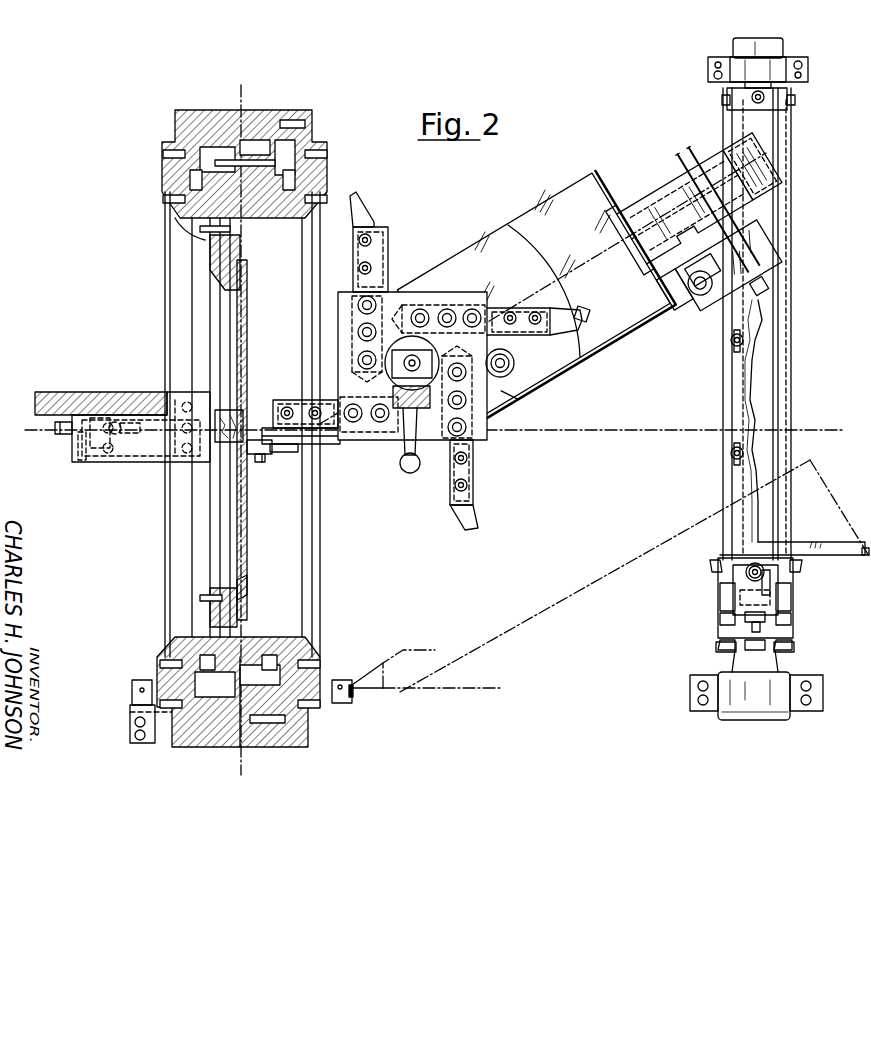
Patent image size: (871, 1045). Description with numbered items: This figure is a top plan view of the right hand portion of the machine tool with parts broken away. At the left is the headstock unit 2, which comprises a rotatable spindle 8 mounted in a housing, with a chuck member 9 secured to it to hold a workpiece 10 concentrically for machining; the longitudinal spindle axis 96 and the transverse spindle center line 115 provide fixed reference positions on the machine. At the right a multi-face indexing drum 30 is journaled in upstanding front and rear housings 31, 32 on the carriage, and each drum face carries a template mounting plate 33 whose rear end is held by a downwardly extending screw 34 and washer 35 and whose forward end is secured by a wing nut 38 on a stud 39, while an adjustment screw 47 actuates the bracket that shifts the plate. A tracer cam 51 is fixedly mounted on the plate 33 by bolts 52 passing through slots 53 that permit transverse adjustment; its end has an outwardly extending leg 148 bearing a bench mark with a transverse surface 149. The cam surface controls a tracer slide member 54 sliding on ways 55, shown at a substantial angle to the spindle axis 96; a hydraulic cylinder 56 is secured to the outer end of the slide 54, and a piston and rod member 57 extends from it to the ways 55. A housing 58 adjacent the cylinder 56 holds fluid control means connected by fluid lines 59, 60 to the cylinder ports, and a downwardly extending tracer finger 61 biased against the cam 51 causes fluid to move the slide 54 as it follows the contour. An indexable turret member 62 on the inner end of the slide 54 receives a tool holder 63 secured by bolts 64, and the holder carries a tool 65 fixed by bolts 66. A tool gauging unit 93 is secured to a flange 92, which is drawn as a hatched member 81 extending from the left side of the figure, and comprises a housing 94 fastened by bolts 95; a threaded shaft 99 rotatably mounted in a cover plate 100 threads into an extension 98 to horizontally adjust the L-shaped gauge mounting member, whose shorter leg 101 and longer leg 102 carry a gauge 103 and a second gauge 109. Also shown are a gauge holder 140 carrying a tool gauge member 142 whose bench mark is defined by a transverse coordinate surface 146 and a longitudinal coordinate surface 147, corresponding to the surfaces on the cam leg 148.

The headstock unit 2 is at (148, 178).
The spindle 8 is at (290, 655).
The chuck member 9 is at (240, 615).
The workpiece 10 is at (247, 578).
The indexing drum 30 is at (772, 375).
The front housing 31 is at (790, 713).
The rear housing 32 is at (785, 58).
The template mounting plate 33 is at (770, 398).
The screw 34 is at (797, 100).
The washer 35 is at (725, 100).
The wing nut 38 is at (792, 578).
The stud 39 is at (793, 565).
The adjustment screw 47 is at (722, 648).
The tracer pattern tool guide template or cam 51 is at (762, 348).
The bolts 52 is at (732, 337).
The slots 53 is at (734, 352).
The tracer slide member 54 is at (605, 340).
The ways 55 is at (559, 385).
The hydraulic cylinder 56 is at (665, 192).
The piston and rod member 57 is at (772, 185).
The housing 58 is at (772, 255).
The fluid line 59 is at (675, 158).
The fluid line 60 is at (690, 158).
The follower or tracer finger 61 is at (765, 290).
The indexable turret member 62 is at (383, 445).
The tool holder 63 is at (383, 663).
The bolts 64 is at (422, 310).
The tool 65 is at (566, 328).
The bolts 66 is at (535, 310).
The arm 81 is at (128, 392).
The flange 92 is at (162, 462).
The tool gauging unit 93 is at (290, 462).
The housing 94 is at (125, 462).
The bolts 95 is at (186, 398).
The longitudinal spindle axis 96 is at (550, 430).
The extension 98 is at (162, 440).
The threaded shaft 99 is at (58, 432).
The cover plate 100 is at (82, 458).
The shorter leg 101 is at (236, 413).
The longer leg 102 is at (305, 440).
The gauge 103 is at (265, 455).
The second gauge 109 is at (302, 450).
The transverse spindle center line 115 is at (244, 245).
The gauge holder 140 is at (130, 720).
The tool gauge member 142 is at (130, 688).
The transversely extending coordinate surface 146 is at (346, 684).
The longitudinally extending coordinate surface 147 is at (352, 690).
The leg 148 is at (835, 528).
The transverse surface 149 is at (866, 545).